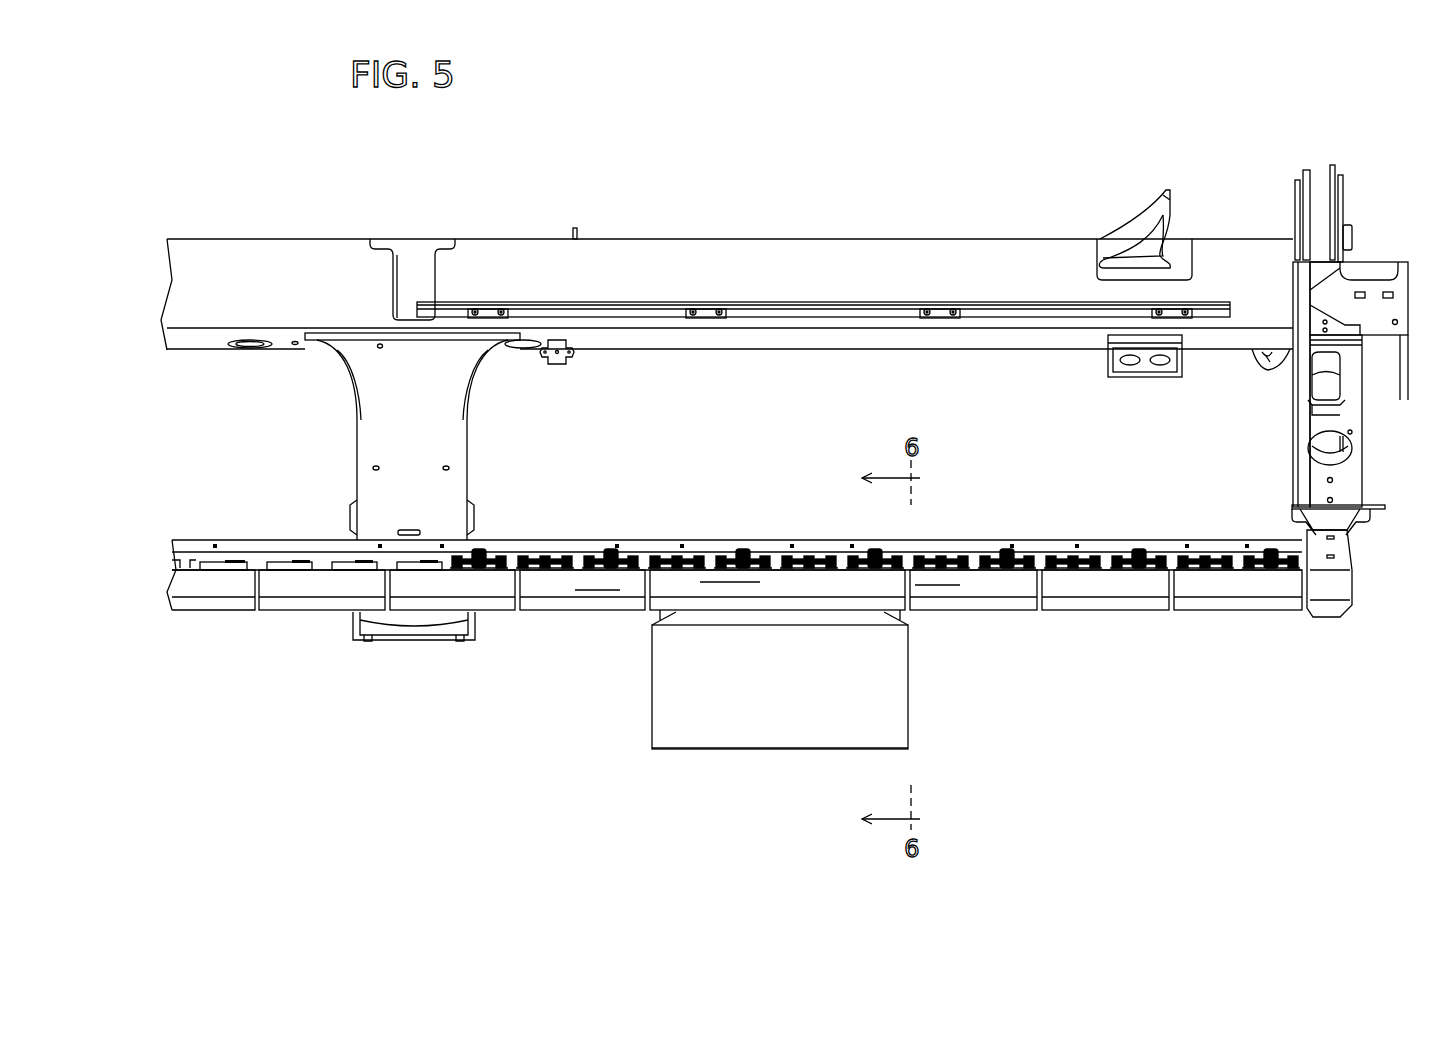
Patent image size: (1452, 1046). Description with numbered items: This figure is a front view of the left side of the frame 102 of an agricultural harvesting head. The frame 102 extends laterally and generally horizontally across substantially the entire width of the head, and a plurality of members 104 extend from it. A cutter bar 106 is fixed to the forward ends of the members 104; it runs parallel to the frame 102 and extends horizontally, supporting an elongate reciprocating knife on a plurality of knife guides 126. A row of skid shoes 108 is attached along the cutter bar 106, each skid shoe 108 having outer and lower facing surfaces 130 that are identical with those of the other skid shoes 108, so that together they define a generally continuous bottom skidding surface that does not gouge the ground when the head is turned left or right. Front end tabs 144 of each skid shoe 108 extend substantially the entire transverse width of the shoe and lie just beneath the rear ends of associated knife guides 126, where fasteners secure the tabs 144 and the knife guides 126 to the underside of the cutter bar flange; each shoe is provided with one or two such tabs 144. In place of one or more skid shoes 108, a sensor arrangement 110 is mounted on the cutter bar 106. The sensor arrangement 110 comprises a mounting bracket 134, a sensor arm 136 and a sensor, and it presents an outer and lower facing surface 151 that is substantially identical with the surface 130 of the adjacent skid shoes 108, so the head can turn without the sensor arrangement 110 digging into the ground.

The frame 102 is at (767, 239).
The members 104 is at (468, 449).
The cutter bar 106 is at (795, 543).
The skid shoes 108 is at (290, 607).
The sensor arrangement 110 is at (687, 735).
The knife guides 126 is at (1078, 553).
The outer and lower facing surfaces 130 is at (600, 590).
The mounting bracket 134 is at (731, 582).
The sensor arm 136 is at (777, 690).
The front end tabs 144 is at (297, 563).
The outer and lower facing surface 151 is at (702, 583).